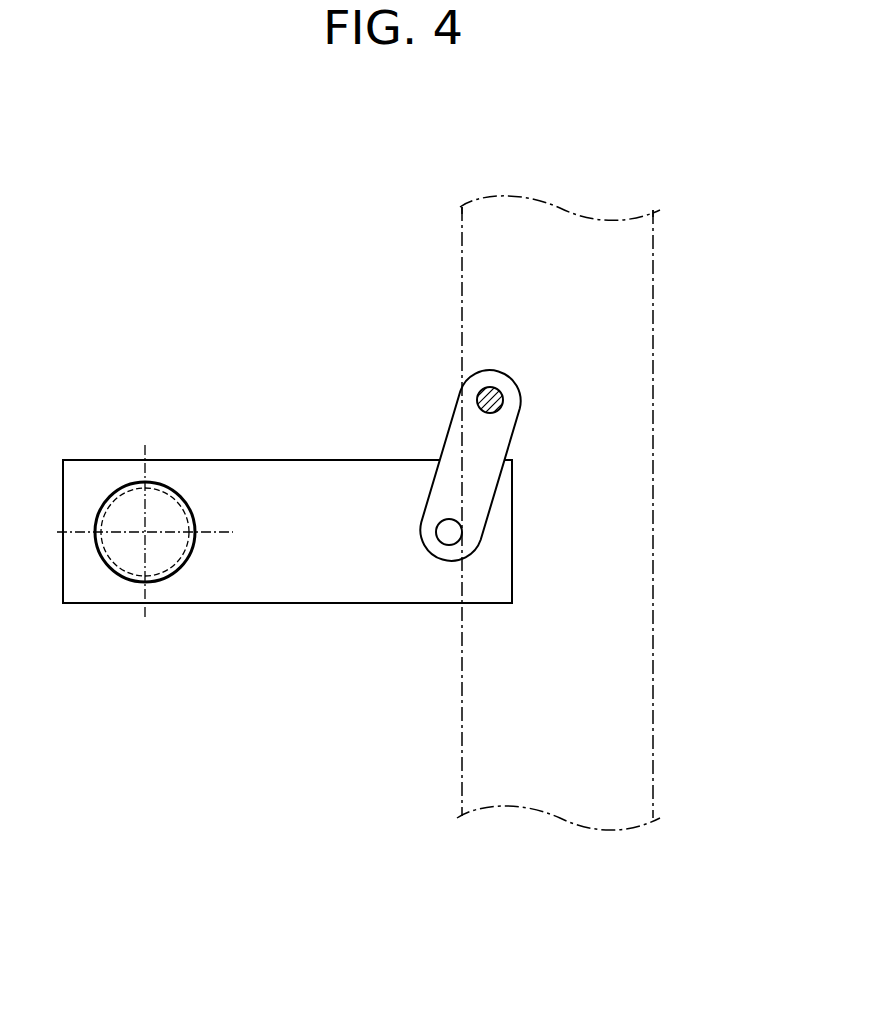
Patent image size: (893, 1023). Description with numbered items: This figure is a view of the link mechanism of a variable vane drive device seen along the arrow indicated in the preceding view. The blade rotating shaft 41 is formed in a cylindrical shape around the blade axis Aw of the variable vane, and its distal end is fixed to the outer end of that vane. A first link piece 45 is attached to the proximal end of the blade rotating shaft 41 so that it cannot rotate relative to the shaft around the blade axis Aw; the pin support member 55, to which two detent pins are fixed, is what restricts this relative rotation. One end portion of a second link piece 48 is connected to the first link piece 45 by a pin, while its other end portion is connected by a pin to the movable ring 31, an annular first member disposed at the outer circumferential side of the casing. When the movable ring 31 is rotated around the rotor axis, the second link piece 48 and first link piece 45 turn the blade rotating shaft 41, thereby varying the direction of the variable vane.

The movable ring 31 is at (653, 288).
The first link piece 45 is at (278, 477).
The second link piece 48 is at (450, 428).
The pin support member 55 is at (120, 488).
The blade rotating shaft 41 is at (160, 485).
The blade axis Aw is at (145, 532).